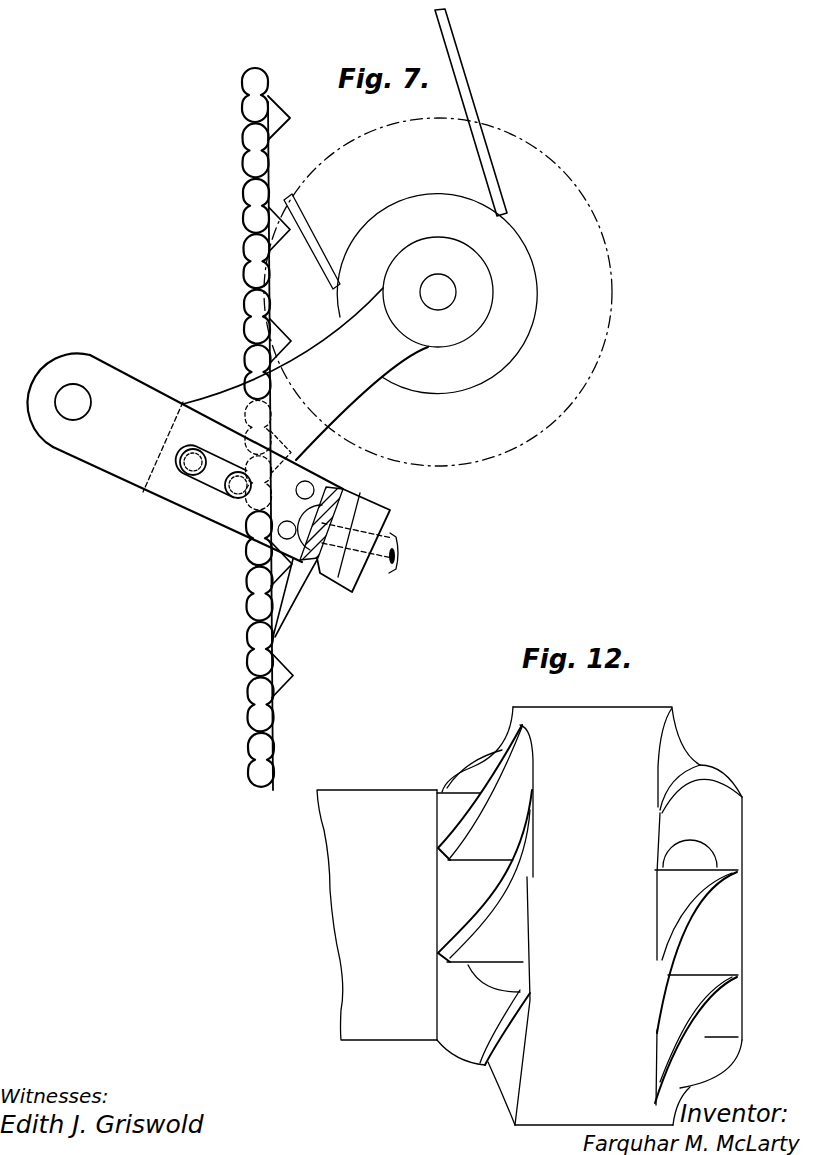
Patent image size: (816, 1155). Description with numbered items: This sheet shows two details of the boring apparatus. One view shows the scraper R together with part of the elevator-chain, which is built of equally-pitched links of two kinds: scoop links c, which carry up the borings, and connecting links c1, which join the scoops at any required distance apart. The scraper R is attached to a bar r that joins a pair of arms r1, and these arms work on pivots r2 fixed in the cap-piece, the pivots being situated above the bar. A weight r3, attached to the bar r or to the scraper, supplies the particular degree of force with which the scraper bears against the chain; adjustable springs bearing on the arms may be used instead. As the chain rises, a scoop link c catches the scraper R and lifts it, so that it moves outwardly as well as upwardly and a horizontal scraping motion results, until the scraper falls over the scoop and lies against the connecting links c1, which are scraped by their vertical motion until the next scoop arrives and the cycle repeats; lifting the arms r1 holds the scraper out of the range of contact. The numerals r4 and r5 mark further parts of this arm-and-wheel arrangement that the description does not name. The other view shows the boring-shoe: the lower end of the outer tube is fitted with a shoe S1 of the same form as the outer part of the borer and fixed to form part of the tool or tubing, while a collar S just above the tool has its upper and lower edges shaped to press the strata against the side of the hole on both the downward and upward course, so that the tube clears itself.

In FIG. 7, the scoop links c is at (270, 120).
In FIG. 7, the connecting links c1 is at (262, 197).
In FIG. 7, the bar r is at (302, 480).
In FIG. 7, the arms r1 is at (185, 457).
In FIG. 7, the pivots r2 is at (73, 402).
In FIG. 7, the weight r3 is at (370, 517).
In FIG. 7, the circle of sprocket wheel path r4 is at (563, 413).
In FIG. 7, the arm of lever r5 is at (360, 327).
In FIG. 7, the scraper R is at (303, 598).
In FIG. 12, the collar S is at (677, 755).
In FIG. 12, the shoe S1 is at (568, 916).